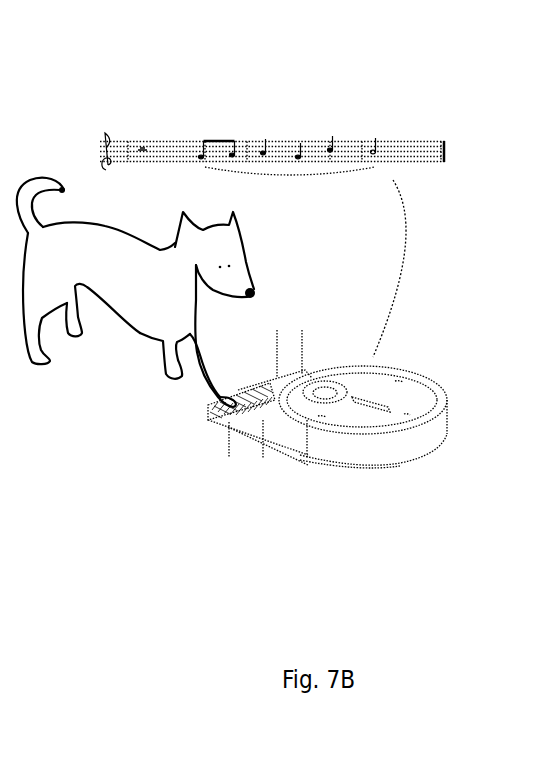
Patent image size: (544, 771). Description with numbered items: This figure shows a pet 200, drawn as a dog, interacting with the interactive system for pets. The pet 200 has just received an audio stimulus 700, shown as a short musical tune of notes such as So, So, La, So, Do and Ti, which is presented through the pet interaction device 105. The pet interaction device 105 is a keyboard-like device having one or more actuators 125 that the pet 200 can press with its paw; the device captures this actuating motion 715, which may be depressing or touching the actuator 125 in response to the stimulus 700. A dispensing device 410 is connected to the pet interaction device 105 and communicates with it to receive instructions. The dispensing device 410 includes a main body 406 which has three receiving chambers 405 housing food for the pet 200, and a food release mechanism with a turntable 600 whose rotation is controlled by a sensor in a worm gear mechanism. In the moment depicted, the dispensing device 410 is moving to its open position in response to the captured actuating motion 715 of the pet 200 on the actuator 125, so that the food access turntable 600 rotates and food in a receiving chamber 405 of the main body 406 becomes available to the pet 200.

The pet 200 is at (67, 240).
The audio stimulus 700 is at (336, 105).
The dispensing device 410 is at (419, 356).
The receiving chamber 405 is at (328, 390).
The turntable 600 is at (405, 405).
The actuator 125 is at (258, 397).
The actuating motion 715 is at (205, 412).
The pet interaction device 105 is at (218, 435).
The main body 406 is at (360, 448).